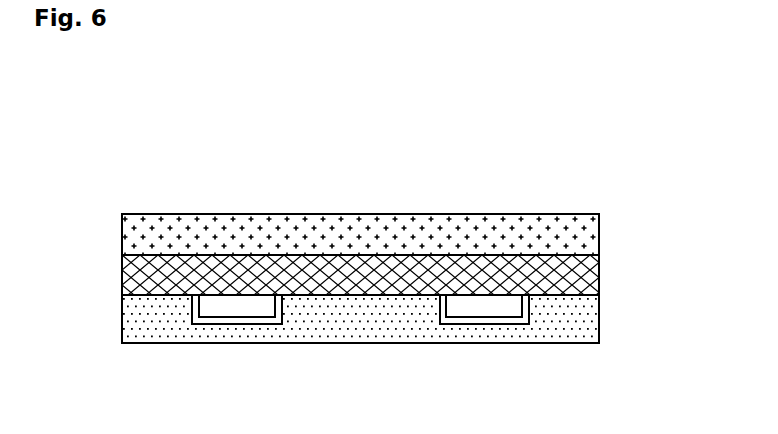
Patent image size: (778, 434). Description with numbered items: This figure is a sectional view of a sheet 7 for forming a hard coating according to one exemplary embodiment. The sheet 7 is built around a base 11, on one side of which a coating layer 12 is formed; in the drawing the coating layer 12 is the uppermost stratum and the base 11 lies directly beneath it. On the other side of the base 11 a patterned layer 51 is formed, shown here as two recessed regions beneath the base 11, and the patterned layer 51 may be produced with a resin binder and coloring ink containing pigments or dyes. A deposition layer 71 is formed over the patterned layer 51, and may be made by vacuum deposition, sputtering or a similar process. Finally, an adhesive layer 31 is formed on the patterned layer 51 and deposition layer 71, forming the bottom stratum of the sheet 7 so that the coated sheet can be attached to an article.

The sheet for forming a hard coating 7 is at (366, 252).
The coating layer 12 is at (599, 232).
The base 11 is at (599, 277).
The adhesive layer 31 is at (599, 317).
The deposition layer 71 is at (122, 297).
The patterned layer 51 is at (507, 326).